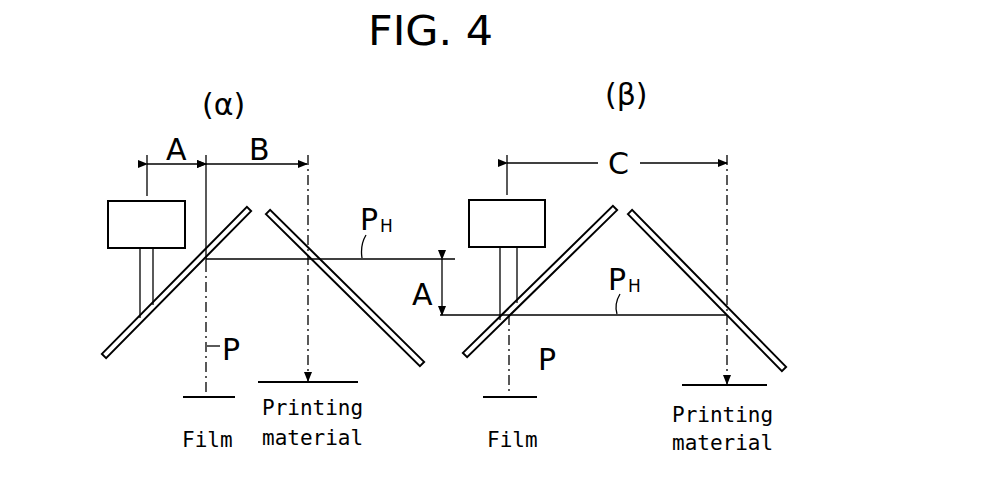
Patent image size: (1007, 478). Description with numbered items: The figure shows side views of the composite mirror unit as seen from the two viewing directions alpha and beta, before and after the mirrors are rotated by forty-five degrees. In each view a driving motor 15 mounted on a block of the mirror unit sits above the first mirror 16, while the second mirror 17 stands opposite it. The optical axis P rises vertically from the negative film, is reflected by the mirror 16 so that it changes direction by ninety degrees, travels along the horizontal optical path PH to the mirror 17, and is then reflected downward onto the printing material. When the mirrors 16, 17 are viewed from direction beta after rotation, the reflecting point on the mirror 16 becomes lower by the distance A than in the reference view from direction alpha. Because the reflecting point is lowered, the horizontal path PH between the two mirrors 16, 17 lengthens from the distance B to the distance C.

The driving motor 15 is at (120, 219).
The mirror 16 is at (128, 334).
The mirror 17 is at (397, 342).